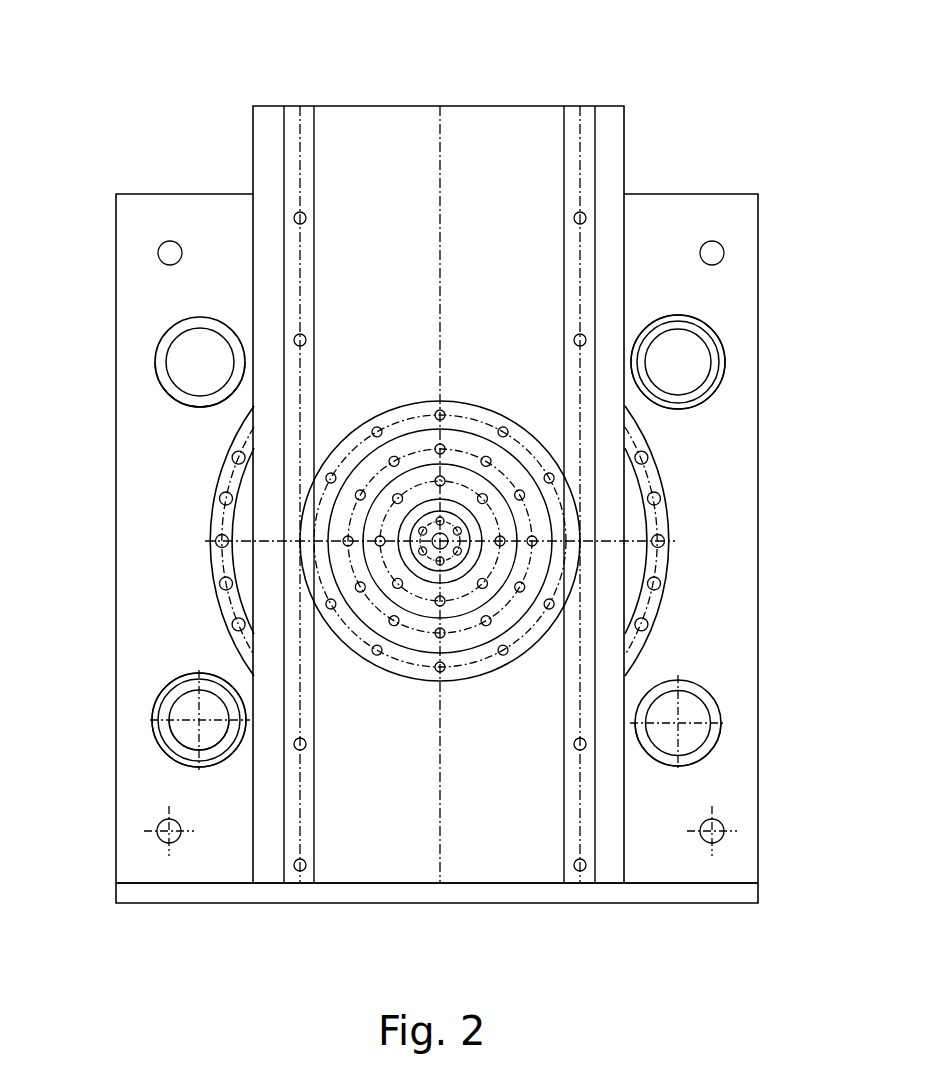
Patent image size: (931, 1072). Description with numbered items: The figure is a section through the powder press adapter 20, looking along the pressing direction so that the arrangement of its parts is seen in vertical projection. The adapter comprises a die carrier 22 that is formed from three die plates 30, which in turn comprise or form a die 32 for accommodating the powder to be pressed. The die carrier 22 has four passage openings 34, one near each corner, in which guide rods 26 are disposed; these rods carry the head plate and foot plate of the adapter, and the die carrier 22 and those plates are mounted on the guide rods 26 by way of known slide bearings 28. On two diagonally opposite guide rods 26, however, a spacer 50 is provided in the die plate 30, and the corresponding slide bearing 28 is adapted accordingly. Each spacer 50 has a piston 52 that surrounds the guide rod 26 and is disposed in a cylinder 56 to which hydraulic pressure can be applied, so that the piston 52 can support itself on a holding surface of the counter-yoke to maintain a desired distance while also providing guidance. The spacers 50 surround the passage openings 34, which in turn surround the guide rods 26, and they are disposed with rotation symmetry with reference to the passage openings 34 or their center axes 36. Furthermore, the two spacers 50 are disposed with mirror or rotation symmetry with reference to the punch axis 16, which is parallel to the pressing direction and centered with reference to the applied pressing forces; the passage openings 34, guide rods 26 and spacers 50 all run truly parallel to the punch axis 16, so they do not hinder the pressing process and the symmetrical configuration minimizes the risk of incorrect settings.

The punch axis 16 is at (434, 541).
The powder press adapter 20 is at (147, 914).
The die carrier 22 is at (238, 90).
The guide rod 26 is at (195, 352).
The slide bearing 28 is at (163, 390).
The die plate 30 is at (737, 548).
The die 32 is at (330, 548).
The passage opening 34 is at (163, 315).
The center axis 36 is at (153, 737).
The spacer 50 is at (178, 672).
The piston 52 is at (683, 333).
The cylinder 56 is at (705, 323).